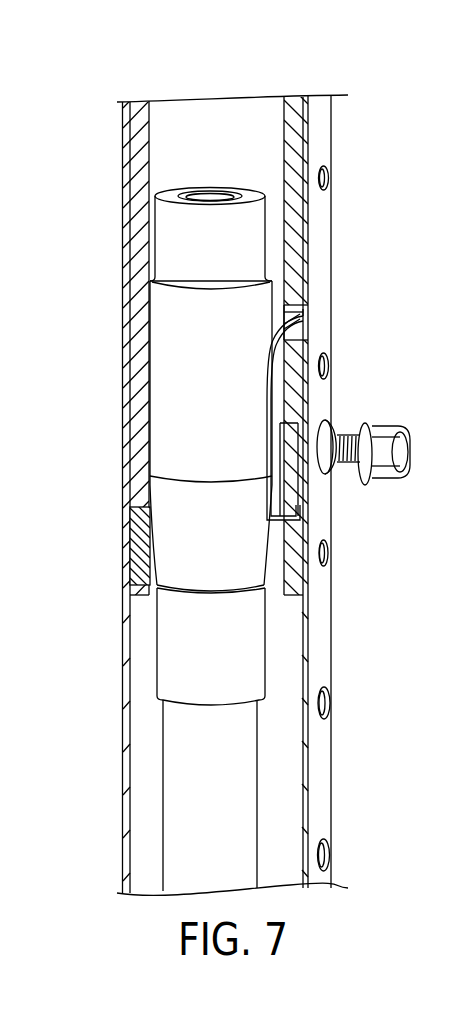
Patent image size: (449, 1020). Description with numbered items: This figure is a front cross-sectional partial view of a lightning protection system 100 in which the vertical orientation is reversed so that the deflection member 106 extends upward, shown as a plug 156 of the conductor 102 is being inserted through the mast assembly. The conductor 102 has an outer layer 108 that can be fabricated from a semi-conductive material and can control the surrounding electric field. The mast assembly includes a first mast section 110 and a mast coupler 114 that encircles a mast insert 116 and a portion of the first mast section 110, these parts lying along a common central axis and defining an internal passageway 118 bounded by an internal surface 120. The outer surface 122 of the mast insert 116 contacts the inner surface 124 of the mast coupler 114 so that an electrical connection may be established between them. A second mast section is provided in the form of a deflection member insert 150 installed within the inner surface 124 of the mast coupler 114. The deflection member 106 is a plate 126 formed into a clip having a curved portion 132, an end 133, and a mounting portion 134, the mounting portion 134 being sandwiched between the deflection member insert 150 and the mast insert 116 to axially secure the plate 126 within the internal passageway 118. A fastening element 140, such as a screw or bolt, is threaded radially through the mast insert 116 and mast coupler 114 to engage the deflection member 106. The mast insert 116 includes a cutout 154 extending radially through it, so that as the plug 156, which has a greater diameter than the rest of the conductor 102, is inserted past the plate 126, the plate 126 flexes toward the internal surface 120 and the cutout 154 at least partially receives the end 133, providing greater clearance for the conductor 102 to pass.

The lightning protection system 100 is at (352, 148).
The conductor 102 is at (195, 822).
The deflection member 106 is at (275, 300).
The outer layer 108 is at (262, 836).
The first mast section 110 is at (282, 142).
The mast coupler 114 is at (120, 784).
The mast insert 116 is at (140, 380).
The internal passageway 118 is at (215, 163).
The internal surface 120 is at (278, 401).
The outer surface 122 is at (126, 443).
The inner surface 124 is at (128, 642).
The plate 126 is at (303, 392).
The curved portion 132 is at (306, 363).
The end 133 is at (312, 312).
The mounting portion 134 is at (290, 564).
The fastening element 140 is at (383, 447).
The deflection member insert 150 is at (138, 558).
The cutout 154 is at (306, 326).
The plug 156 is at (172, 346).